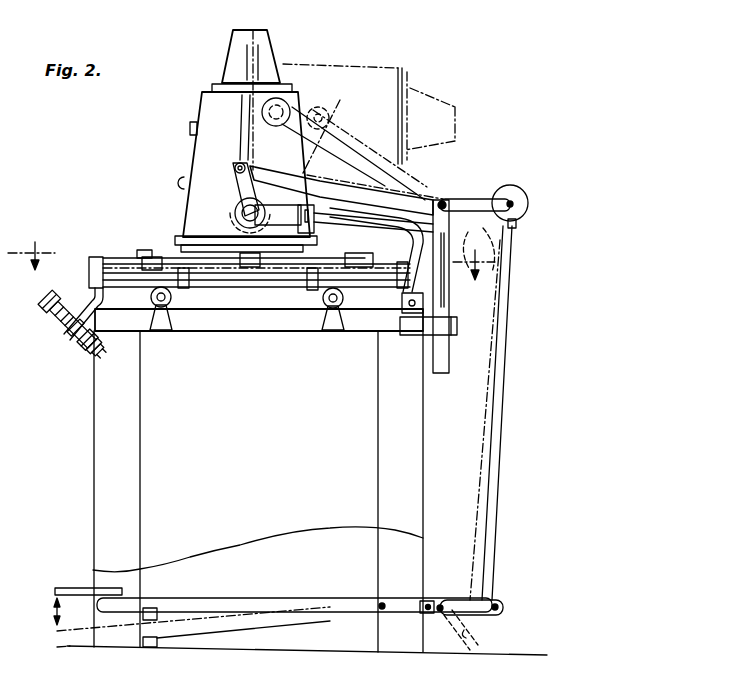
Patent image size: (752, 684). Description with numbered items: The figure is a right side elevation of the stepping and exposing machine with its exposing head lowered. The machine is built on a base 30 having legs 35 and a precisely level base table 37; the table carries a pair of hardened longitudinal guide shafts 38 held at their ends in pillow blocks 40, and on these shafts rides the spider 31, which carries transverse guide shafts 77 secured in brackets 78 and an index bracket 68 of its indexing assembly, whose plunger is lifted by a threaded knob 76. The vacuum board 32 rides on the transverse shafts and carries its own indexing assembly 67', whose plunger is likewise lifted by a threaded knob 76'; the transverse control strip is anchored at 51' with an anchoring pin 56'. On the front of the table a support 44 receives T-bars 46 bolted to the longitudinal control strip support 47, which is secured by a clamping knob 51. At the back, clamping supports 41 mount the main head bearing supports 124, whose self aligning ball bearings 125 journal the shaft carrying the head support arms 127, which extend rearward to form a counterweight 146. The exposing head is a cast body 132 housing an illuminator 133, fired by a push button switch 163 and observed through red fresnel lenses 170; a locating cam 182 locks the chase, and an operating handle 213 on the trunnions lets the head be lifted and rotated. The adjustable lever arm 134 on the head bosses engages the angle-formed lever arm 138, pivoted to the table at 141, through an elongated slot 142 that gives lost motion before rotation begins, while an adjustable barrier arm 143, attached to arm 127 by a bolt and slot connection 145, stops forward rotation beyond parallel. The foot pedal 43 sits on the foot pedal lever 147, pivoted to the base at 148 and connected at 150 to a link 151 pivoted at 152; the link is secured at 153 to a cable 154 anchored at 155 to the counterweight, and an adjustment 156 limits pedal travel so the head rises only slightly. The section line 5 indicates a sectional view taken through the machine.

The illuminator 133 is at (262, 43).
The cast body 132 is at (369, 114).
The push button switch 163 is at (189, 129).
The red fresnel lenses 170 is at (178, 183).
The adjustable lever arm 134 is at (237, 180).
The elongated slot 142 is at (247, 166).
The lever arm 138 is at (341, 185).
The operating handle 213 is at (242, 207).
The threaded knob 76' is at (231, 222).
The adjustable barrier arm 143 is at (284, 221).
The bolt and slot connection 145 is at (322, 218).
The head support arms 127 is at (374, 200).
The anchoring pin 56' is at (376, 250).
The pivot 141 is at (410, 313).
The self aligning ball bearings 125 is at (444, 198).
The counterweight 146 is at (516, 194).
The cable anchorage 155 is at (517, 224).
The main head bearing supports 124 is at (450, 298).
The clamping supports 41 is at (458, 326).
The cable 154 is at (497, 543).
The section line 5 is at (251, 254).
The spider 31 is at (216, 286).
The vacuum board 32 is at (117, 256).
The transverse guide shafts 77 is at (113, 257).
The brackets 78 is at (93, 257).
The anchorage 51' is at (144, 243).
The locating cam 182 is at (170, 252).
The indexing assembly 67' is at (331, 285).
The index bracket 68 is at (91, 286).
The clamping knob 51 is at (54, 324).
The threaded knob 76 is at (35, 299).
The longitudinal control strip support 47 is at (78, 340).
The T-bars 46 is at (85, 348).
The support 44 is at (92, 352).
The longitudinal guide shafts 38 is at (150, 299).
The pillow blocks 40 is at (163, 331).
The base table 37 is at (228, 322).
The base 30 is at (246, 425).
The legs 35 is at (106, 573).
The foot pedal 43 is at (72, 588).
The adjustment 156 is at (163, 611).
The foot pedal lever 147 is at (232, 614).
The pivot 148 is at (380, 608).
The pivotal connection 150 is at (425, 609).
The pivot 152 is at (440, 612).
The link 151 is at (456, 622).
The cable connection 153 is at (504, 607).